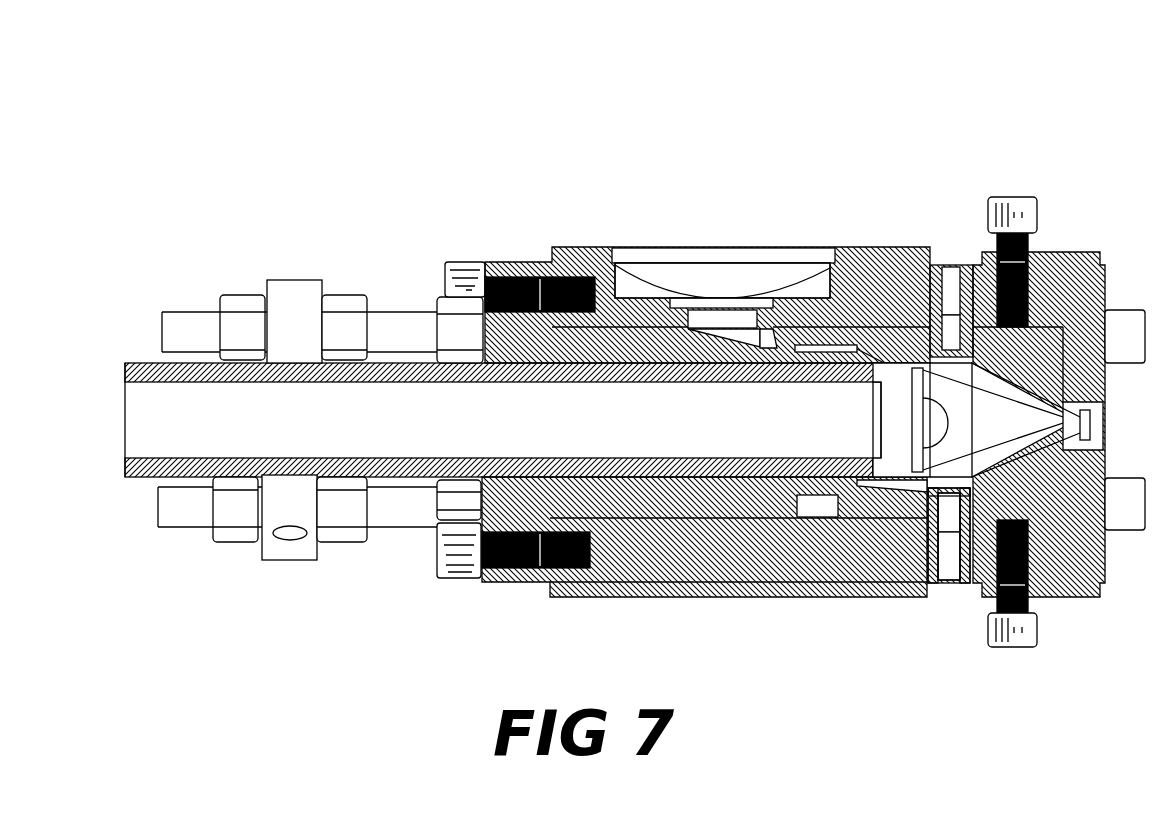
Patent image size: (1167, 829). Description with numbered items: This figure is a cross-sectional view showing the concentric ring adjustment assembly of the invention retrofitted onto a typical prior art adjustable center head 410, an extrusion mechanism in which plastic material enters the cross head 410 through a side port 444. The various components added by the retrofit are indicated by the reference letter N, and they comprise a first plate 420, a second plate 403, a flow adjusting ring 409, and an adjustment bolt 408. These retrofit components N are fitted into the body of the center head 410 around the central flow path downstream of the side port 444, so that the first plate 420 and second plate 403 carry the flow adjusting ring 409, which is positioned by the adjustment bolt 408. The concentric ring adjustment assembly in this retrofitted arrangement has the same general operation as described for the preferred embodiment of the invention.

The adjustable center head 410 is at (806, 92).
The side port 444 is at (690, 275).
The flow adjusting ring 409 is at (927, 488).
The first plate 420 is at (933, 587).
The adjustment bolt 408 is at (943, 580).
The second plate 403 is at (957, 587).
The retrofit components N is at (957, 272).